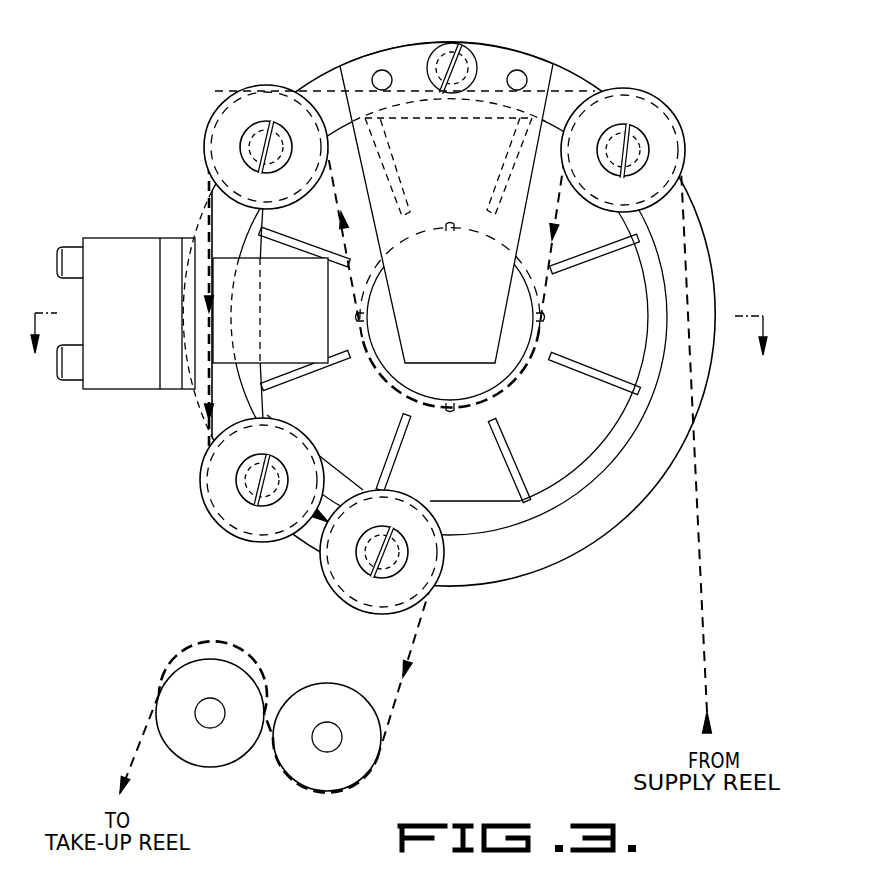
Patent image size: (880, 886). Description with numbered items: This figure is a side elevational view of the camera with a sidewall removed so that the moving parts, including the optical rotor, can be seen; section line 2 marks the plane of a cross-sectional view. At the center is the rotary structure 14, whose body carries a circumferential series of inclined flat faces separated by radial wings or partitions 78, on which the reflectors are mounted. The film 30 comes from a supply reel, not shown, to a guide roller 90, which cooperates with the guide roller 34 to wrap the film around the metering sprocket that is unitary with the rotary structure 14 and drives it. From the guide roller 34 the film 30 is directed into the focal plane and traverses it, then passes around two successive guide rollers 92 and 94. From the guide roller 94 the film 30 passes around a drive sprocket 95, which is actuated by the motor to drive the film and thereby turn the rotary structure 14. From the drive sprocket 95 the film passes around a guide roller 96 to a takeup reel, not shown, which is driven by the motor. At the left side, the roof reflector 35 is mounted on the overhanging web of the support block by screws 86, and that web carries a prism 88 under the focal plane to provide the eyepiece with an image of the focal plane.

The rotary structure 14 is at (510, 528).
The film 30 is at (347, 238).
The guide roller 34 is at (248, 87).
The roof reflector 35 is at (120, 243).
The radial wings or partitions 78 is at (572, 268).
The screws 86 is at (76, 246).
The prism 88 is at (236, 330).
The guide roller 90 is at (667, 127).
The guide roller 92 is at (232, 522).
The guide roller 94 is at (357, 588).
The drive sprocket 95 is at (350, 773).
The guide roller 96 is at (223, 763).
The section line 2- 2 is at (399, 345).